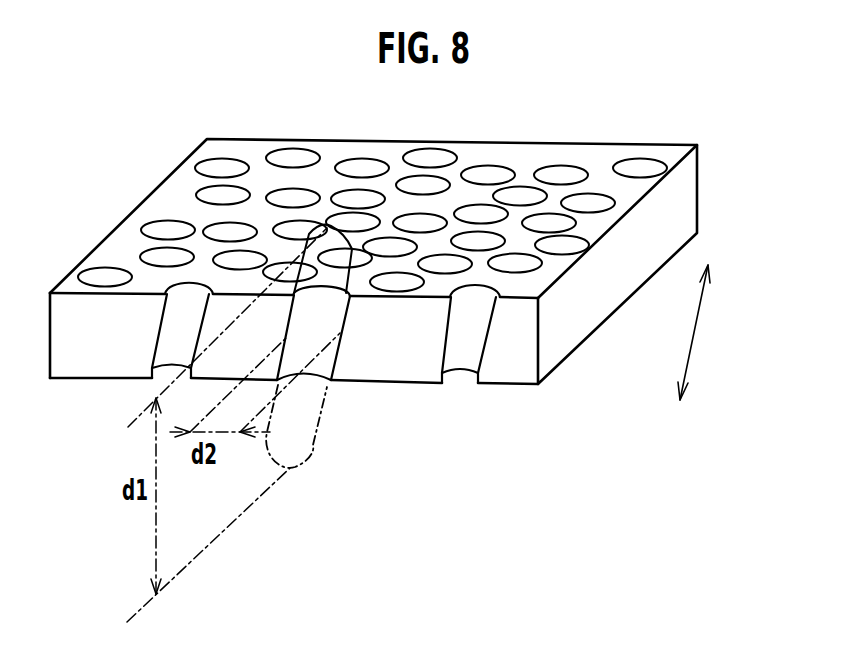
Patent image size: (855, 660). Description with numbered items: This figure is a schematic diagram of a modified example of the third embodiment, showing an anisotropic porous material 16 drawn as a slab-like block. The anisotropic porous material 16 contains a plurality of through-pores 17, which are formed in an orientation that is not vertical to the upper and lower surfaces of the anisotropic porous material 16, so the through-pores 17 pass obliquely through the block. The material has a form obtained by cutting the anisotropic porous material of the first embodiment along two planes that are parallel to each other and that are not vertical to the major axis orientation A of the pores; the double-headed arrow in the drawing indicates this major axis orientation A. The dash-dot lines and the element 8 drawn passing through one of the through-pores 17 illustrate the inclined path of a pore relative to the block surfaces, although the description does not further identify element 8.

The anisotropic porous material 16 is at (697, 192).
The through-pores 17 is at (483, 358).
The pin 8 is at (322, 425).
The major axis orientation of the pores A is at (698, 328).